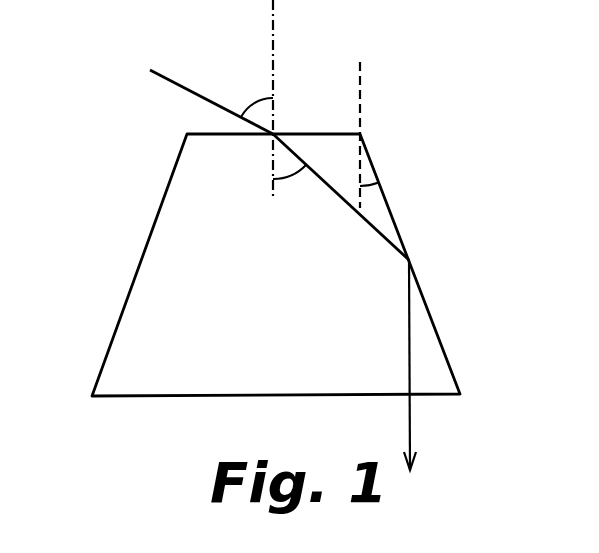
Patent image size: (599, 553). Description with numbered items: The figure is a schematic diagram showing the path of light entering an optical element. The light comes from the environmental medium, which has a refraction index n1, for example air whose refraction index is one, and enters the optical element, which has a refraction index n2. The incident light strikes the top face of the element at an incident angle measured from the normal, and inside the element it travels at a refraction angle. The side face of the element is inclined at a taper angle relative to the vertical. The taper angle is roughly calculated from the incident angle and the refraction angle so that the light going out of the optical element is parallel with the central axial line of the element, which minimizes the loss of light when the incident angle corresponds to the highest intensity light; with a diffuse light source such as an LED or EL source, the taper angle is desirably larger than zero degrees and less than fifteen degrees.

The optical axis A is at (276, 54).
The refraction index of the environmental medium n1 is at (54, 175).
The refraction index of the optical element n2 is at (276, 265).